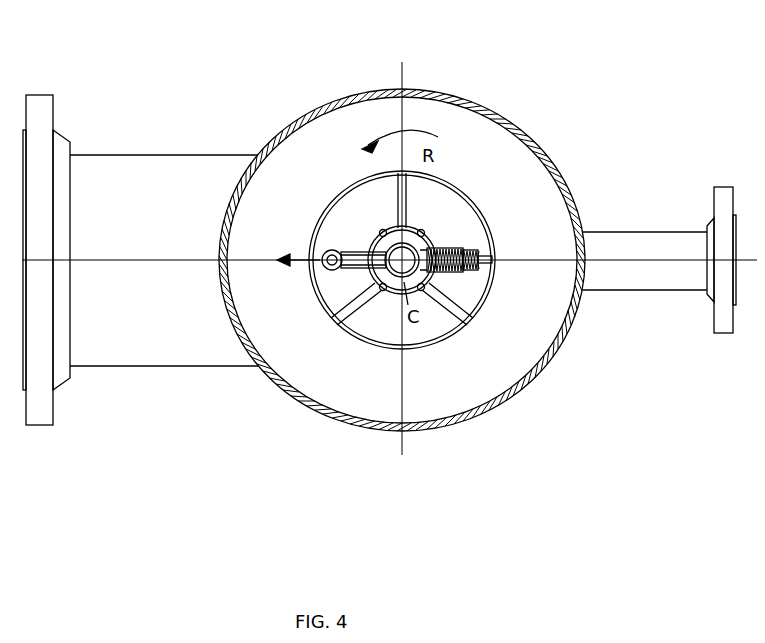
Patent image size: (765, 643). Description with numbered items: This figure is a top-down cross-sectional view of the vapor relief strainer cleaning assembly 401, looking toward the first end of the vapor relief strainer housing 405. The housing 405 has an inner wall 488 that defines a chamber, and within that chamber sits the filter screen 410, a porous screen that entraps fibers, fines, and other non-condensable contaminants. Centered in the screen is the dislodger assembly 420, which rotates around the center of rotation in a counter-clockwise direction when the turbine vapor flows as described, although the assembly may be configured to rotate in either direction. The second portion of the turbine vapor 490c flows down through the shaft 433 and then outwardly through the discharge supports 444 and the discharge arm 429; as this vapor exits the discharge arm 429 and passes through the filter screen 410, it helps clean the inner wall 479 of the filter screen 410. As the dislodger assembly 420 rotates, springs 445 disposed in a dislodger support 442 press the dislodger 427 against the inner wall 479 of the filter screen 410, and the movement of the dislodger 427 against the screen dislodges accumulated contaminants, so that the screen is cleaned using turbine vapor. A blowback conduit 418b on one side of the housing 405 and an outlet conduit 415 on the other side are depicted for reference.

The vapor relief strainer cleaning assembly 401 is at (172, 86).
The vapor relief strainer housing 405 is at (530, 142).
The filter screen 410 is at (440, 342).
The outlet conduit 415 is at (145, 348).
The blowback conduit 418b is at (660, 275).
The dislodger assembly 420 is at (447, 316).
The dislodger 427 is at (485, 252).
The discharge arm 429 is at (318, 246).
The shaft 433 is at (392, 297).
The dislodger support 442 is at (472, 246).
The discharge supports 444 is at (346, 250).
The springs 445 is at (445, 247).
The inner wall of the filter screen 479 is at (386, 194).
The inner wall 488 is at (462, 132).
The second portion of the turbine vapor 490c is at (296, 263).